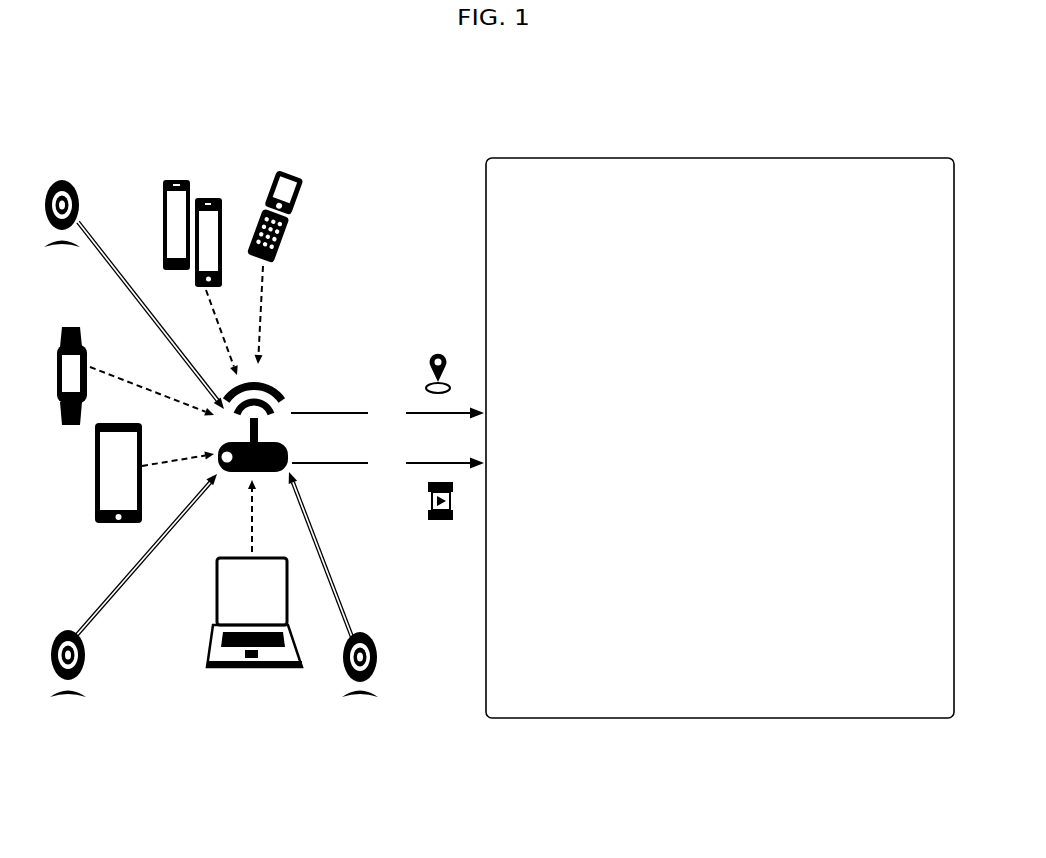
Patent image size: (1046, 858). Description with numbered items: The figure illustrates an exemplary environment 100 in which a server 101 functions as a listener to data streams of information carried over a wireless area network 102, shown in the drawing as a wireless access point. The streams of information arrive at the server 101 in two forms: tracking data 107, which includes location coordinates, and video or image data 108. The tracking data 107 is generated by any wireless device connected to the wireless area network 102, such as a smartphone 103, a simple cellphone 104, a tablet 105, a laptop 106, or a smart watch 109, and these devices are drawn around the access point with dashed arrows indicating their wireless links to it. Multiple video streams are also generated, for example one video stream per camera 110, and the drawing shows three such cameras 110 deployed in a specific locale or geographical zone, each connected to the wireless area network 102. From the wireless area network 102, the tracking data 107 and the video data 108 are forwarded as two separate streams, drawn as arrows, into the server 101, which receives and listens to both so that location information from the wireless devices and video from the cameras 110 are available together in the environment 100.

The system 100 is at (498, 411).
The server 101 is at (720, 438).
The wireless area network 102 is at (342, 391).
The smartphone 103 is at (200, 267).
The simple cellphone 104 is at (292, 267).
The tablet 105 is at (154, 491).
The laptop 106 is at (254, 597).
The tracking data 107 is at (387, 393).
The video data 108 is at (388, 484).
The smart watch 109 is at (134, 393).
The camera 110 is at (211, 460).